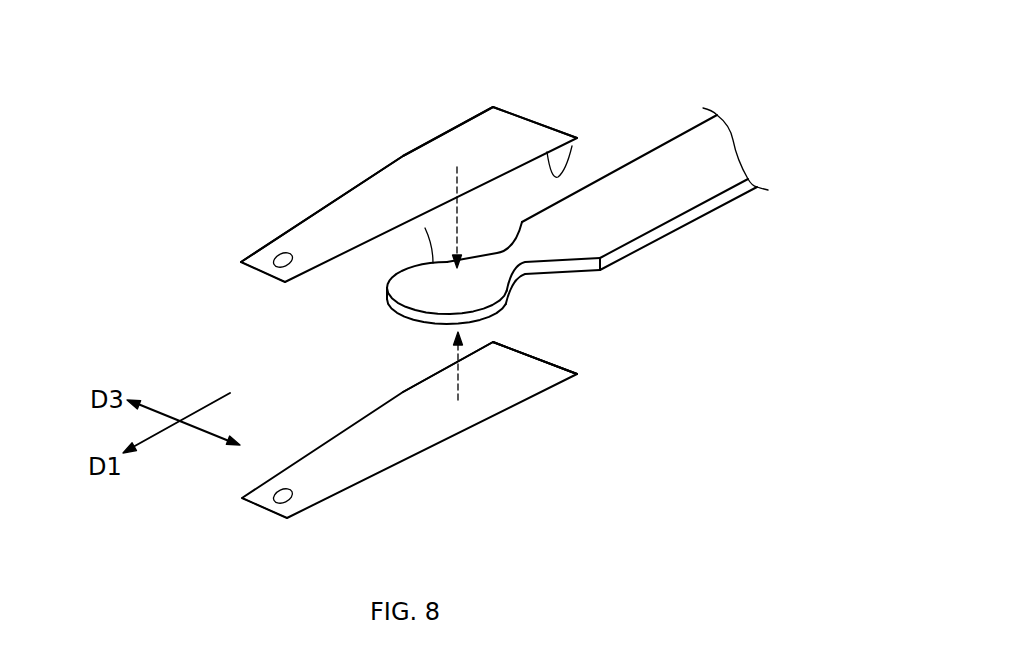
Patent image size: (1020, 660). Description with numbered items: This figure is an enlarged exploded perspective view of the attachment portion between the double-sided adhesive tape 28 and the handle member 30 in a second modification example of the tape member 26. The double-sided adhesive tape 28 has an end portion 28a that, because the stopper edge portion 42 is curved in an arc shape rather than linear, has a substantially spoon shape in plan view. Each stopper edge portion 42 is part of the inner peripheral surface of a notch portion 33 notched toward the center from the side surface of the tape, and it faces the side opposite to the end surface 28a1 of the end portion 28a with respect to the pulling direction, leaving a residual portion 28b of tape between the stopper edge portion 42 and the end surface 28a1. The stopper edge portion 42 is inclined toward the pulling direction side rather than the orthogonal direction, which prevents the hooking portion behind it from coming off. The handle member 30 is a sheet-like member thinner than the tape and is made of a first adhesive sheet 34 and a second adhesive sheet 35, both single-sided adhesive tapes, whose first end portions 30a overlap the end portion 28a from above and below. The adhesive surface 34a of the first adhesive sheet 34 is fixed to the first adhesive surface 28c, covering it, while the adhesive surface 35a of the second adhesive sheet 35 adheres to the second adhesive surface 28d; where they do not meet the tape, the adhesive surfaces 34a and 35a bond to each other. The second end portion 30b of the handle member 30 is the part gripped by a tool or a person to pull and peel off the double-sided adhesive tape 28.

The tape member 26 is at (156, 43).
The double-sided adhesive tape 28 is at (510, 223).
The end portion 28a is at (392, 320).
The end surface 28a1 is at (430, 297).
The residual portion 28b is at (387, 288).
The first adhesive surface 28c is at (670, 168).
The second adhesive surface 28d is at (685, 223).
The handle member 30 is at (258, 240).
The first end portion 30a is at (500, 135).
The second end portion 30b is at (260, 270).
The notch portion 33 is at (483, 250).
The first adhesive sheet 34 is at (310, 208).
The adhesive surface 34a is at (563, 137).
The second adhesive sheet 35 is at (404, 470).
The adhesive surface 35a is at (490, 417).
The stopper edge portion 42 is at (425, 228).